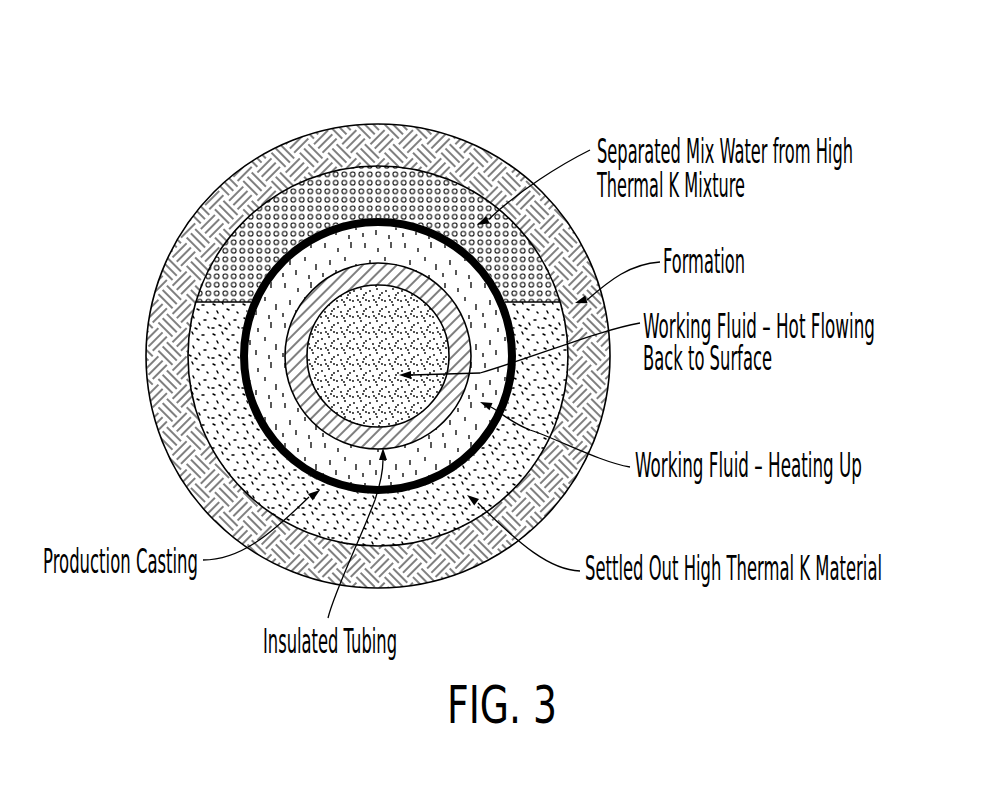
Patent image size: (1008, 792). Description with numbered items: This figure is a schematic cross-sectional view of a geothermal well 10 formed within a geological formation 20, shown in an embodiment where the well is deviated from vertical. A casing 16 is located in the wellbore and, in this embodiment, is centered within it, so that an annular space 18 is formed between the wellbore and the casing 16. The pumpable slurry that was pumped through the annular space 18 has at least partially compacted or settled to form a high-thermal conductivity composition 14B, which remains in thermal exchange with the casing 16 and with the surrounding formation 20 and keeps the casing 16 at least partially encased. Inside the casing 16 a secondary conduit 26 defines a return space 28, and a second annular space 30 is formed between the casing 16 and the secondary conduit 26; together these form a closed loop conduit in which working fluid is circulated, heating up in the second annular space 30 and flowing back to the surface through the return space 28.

The geothermal well 10 is at (558, 93).
The high-thermal conductivity composition 14B is at (222, 385).
The casing 16 is at (318, 237).
The annular space 18 is at (265, 222).
The geological formation 20 is at (567, 255).
The secondary conduit 26 is at (383, 273).
The return space 28 is at (408, 320).
The second annular space 30 is at (365, 238).